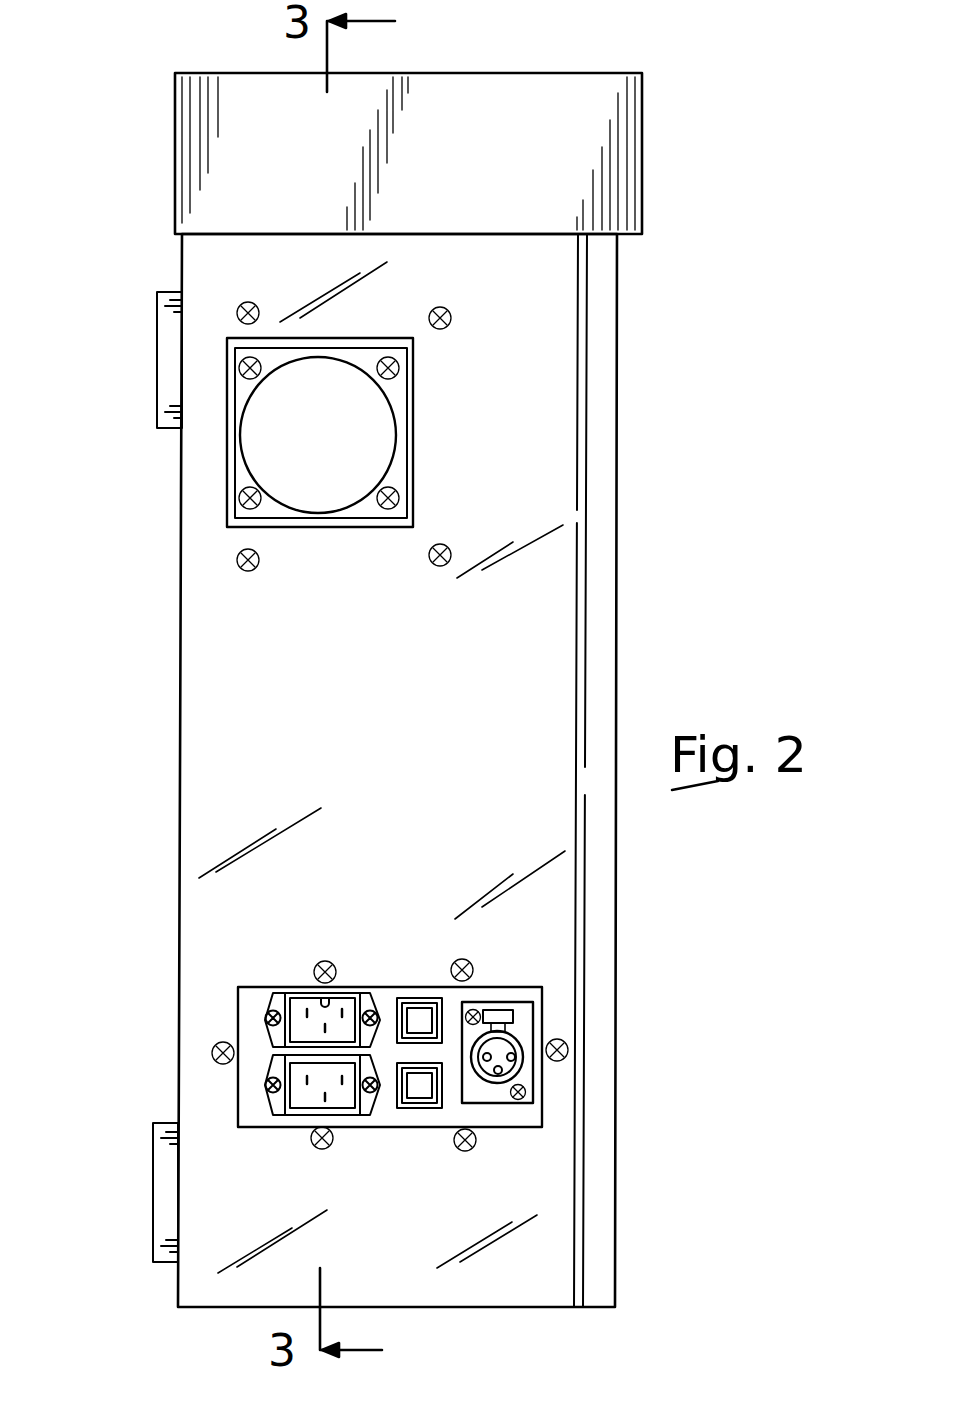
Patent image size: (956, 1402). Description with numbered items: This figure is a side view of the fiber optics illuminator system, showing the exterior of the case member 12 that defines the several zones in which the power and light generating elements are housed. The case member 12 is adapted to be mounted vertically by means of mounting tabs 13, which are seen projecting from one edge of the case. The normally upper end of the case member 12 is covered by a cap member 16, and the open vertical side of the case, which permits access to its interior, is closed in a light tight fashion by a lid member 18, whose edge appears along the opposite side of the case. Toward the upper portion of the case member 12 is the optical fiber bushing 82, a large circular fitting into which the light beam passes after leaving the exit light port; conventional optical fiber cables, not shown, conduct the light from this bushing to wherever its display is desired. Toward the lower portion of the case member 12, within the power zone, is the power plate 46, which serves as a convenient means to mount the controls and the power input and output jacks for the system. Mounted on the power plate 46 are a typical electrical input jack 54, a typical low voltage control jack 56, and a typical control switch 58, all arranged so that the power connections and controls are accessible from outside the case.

The case member 12 is at (386, 801).
The mounting tabs 13 is at (157, 410).
The cap member 16 is at (605, 90).
The lid member 18 is at (606, 595).
The optical fiber bushing 82 is at (375, 413).
The electrical input jack 54 is at (300, 1003).
The control switch 58 is at (420, 1007).
The power plate 46 is at (492, 992).
The low voltage control jack 56 is at (488, 1078).